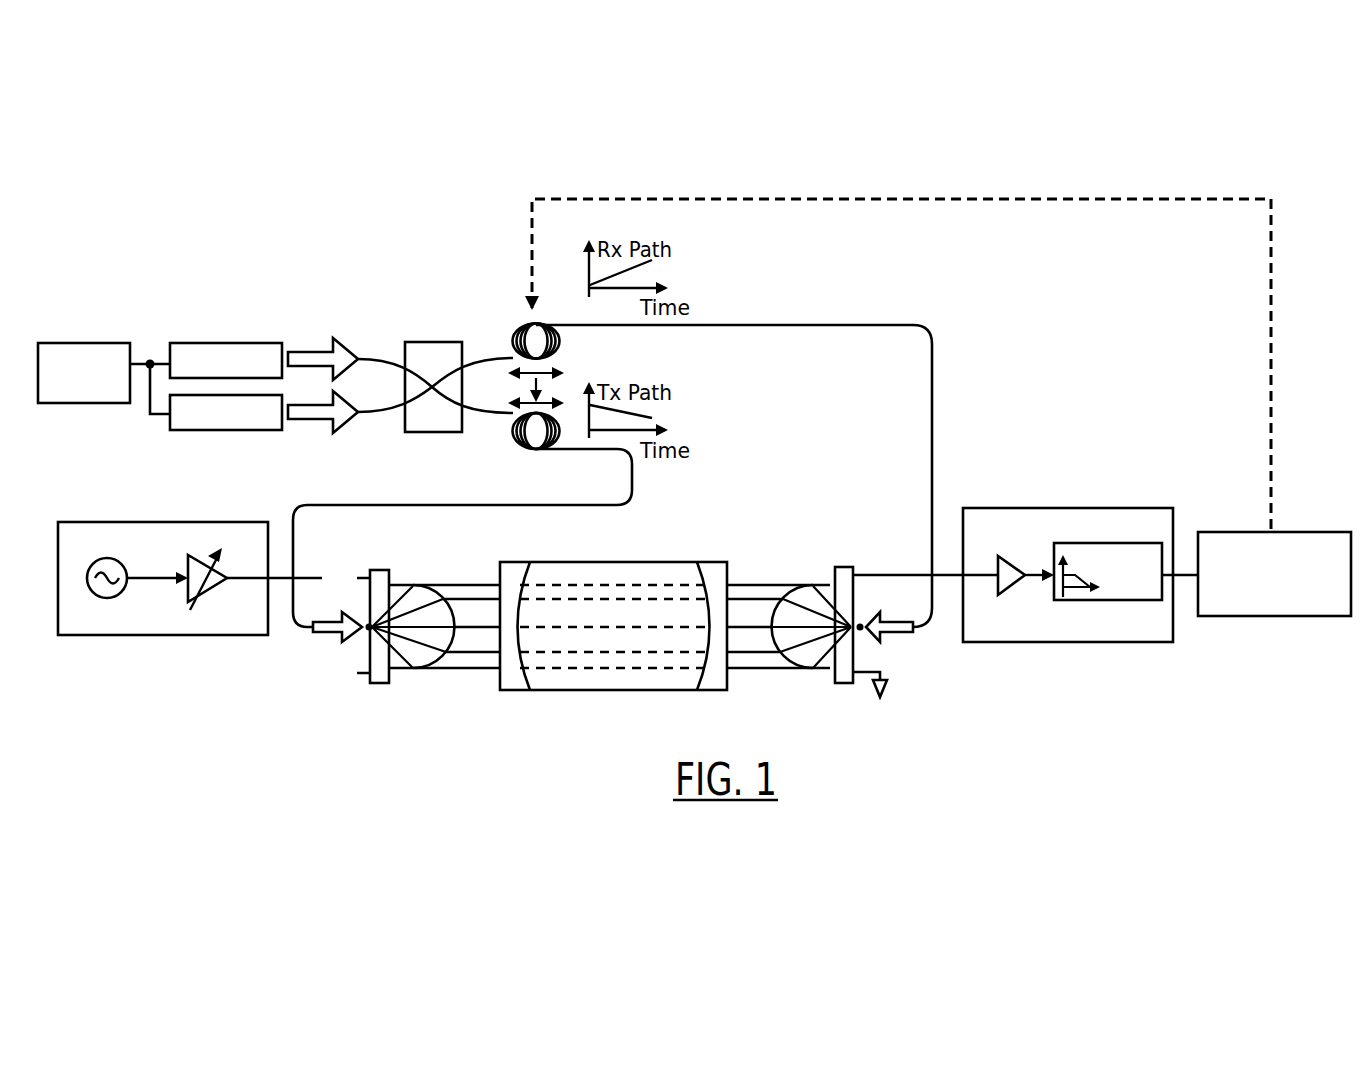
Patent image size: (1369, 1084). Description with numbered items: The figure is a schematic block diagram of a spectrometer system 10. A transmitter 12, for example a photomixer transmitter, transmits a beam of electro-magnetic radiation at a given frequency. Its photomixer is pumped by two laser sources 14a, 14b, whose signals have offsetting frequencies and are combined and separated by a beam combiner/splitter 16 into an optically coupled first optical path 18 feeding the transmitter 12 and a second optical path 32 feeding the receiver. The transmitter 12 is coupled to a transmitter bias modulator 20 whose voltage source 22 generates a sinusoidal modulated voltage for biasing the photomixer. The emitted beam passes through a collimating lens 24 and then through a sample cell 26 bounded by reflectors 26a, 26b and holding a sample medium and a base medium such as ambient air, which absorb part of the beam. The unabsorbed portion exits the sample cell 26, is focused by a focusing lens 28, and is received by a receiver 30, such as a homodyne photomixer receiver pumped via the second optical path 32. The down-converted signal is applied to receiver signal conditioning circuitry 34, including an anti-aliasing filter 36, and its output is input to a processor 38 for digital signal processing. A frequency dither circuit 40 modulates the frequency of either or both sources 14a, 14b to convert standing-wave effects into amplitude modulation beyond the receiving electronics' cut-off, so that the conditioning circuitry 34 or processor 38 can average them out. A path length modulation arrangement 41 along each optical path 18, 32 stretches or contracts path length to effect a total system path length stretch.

The spectrometer system 10 is at (1032, 325).
The transmitter 12 is at (378, 568).
The laser source 14a is at (238, 343).
The laser source 14b is at (235, 430).
The beam combiner/splitter 16 is at (440, 342).
The first optical path 18 is at (478, 503).
The transmitter bias modulator 20 is at (158, 521).
The voltage source 22 is at (113, 597).
The collimating lens 24 is at (405, 670).
The sample cell 26 is at (638, 621).
The reflector 26a is at (512, 690).
The reflector 26b is at (715, 690).
The focusing lens 28 is at (812, 668).
The receiver 30 is at (847, 566).
The second optical path 32 is at (812, 324).
The receiver signal conditioning circuitry 34 is at (1070, 507).
The anti-aliasing filter 36 is at (1105, 600).
The processor 38 is at (1250, 531).
The frequency dither circuit 40 is at (92, 343).
The path length modulation arrangement 41 is at (513, 323).